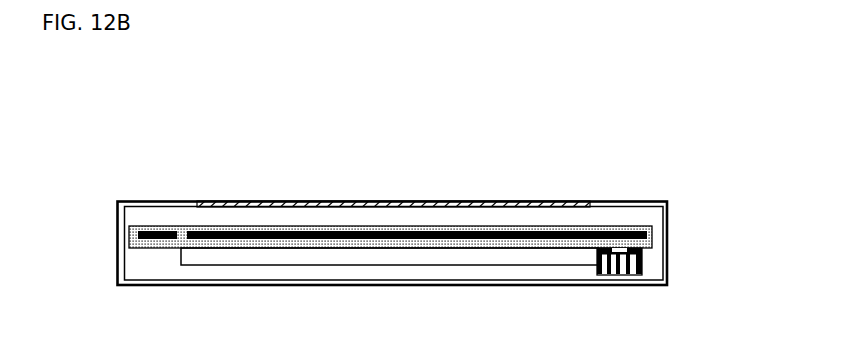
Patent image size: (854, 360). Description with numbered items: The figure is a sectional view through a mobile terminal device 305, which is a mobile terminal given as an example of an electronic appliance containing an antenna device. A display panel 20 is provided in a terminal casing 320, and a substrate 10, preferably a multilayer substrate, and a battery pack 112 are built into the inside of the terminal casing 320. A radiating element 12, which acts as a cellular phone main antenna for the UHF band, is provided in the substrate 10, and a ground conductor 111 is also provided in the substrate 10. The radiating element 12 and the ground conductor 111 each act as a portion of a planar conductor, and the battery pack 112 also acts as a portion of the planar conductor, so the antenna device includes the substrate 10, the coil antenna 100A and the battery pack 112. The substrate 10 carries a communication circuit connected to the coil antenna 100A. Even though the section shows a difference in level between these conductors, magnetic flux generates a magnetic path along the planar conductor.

The mobile terminal device 305 is at (307, 109).
The terminal casing 320 is at (667, 201).
The display panel 20 is at (432, 201).
The substrate 10 is at (653, 234).
The radiating element 12 is at (159, 229).
The ground conductor 111 is at (388, 238).
The battery pack 112 is at (282, 265).
The coil antenna 100A is at (625, 276).